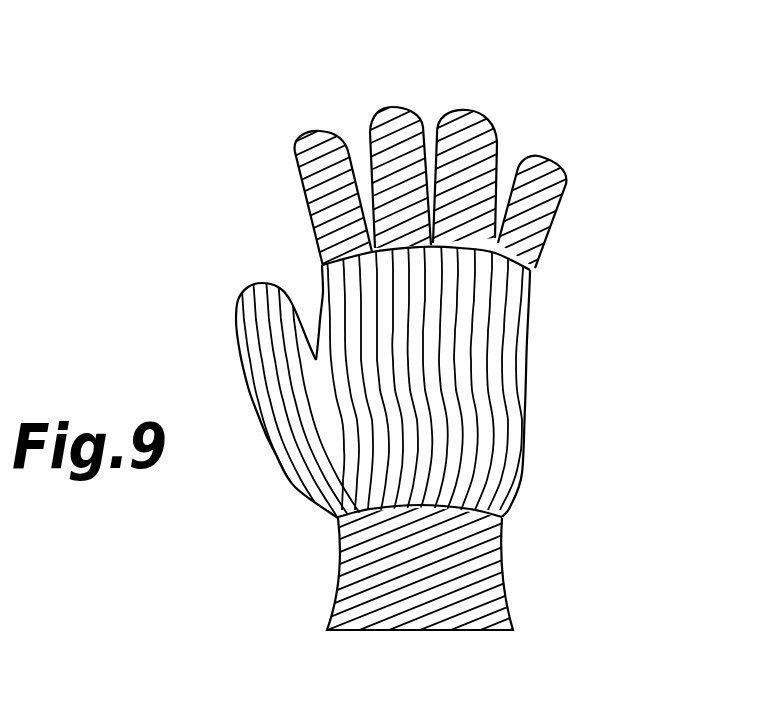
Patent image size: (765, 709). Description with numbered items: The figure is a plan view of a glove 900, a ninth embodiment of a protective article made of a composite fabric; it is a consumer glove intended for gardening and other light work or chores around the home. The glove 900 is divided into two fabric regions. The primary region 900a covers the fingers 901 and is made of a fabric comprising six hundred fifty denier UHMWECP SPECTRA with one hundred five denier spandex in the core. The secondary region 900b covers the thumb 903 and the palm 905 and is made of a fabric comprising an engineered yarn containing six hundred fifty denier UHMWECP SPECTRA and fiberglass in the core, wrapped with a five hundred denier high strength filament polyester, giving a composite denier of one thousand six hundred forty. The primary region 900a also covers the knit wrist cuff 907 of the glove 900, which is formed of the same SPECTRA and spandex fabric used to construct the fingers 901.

The glove 900 is at (218, 365).
The fingers 901 is at (538, 158).
The primary region 900a is at (458, 222).
The secondary region 900b is at (415, 427).
The thumb 903 is at (253, 288).
The palm 905 is at (523, 353).
The knit wrist cuff 907 is at (482, 632).